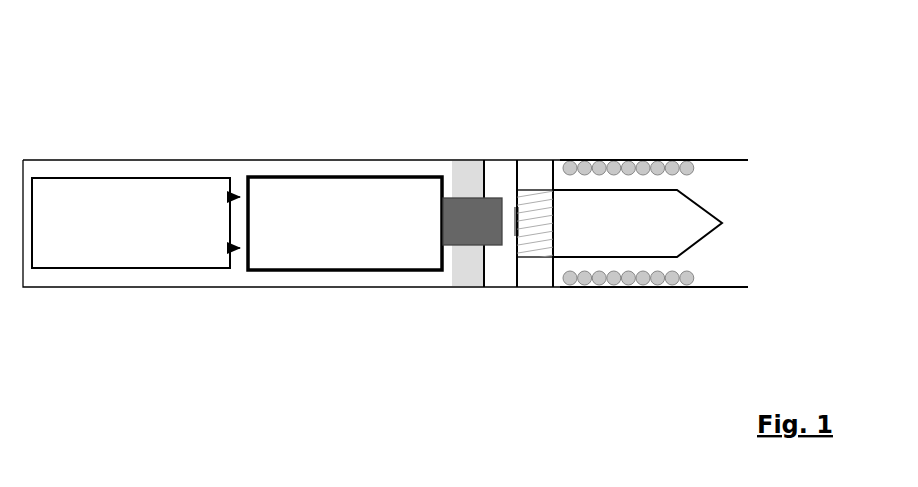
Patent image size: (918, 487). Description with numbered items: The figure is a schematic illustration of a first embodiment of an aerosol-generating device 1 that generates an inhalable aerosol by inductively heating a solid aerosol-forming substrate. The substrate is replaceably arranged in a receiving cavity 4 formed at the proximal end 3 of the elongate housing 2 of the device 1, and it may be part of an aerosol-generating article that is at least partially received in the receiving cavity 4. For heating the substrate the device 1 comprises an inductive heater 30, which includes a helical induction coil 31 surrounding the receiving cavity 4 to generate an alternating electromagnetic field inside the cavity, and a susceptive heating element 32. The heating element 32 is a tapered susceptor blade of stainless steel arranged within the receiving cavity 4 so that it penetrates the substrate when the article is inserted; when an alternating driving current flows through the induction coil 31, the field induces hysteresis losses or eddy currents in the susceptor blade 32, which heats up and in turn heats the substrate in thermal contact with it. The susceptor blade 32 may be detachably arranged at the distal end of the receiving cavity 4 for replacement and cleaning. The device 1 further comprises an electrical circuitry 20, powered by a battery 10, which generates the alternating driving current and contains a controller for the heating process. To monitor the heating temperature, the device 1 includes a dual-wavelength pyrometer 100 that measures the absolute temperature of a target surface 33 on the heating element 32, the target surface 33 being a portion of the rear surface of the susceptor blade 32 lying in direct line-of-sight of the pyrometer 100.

The aerosol-generating device 1 is at (217, 78).
The battery 10 is at (150, 195).
The electrical circuitry 20 is at (325, 200).
The dual-wavelength pyrometer 100 is at (459, 225).
The target surface 33 is at (515, 208).
The susceptive heating element 32 is at (703, 220).
The inductive heater 30 is at (648, 185).
The helical induction coil 31 is at (615, 277).
The proximal end 3 is at (752, 148).
The elongate housing 2 is at (721, 289).
The receiving cavity 4 is at (742, 210).